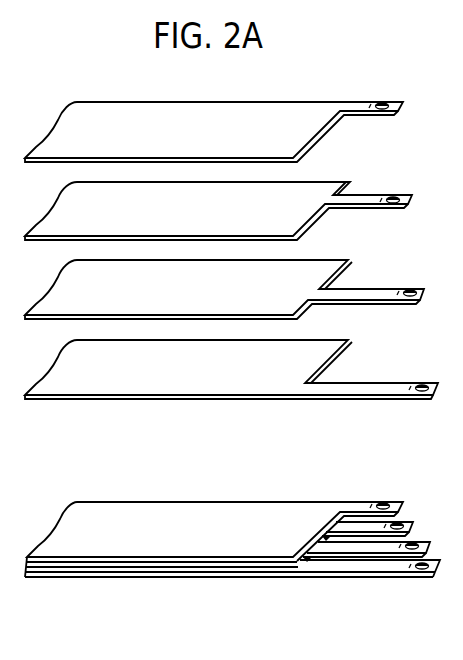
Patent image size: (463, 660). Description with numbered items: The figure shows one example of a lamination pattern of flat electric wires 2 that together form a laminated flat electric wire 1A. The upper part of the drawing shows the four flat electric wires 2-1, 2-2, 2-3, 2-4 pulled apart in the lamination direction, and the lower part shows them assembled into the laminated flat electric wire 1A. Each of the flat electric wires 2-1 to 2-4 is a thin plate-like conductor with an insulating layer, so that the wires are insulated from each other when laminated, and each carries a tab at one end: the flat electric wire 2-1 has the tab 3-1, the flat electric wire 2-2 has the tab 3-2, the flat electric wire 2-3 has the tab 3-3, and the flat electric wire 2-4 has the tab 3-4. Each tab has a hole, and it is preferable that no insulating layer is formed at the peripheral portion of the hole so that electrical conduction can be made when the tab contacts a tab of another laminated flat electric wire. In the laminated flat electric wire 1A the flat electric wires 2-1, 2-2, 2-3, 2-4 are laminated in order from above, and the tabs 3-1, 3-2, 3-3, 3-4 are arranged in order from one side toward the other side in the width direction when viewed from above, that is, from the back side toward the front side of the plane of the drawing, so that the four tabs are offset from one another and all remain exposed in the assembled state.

The flat electric wires 2 is at (135, 135).
The flat electric wire 2-1 is at (214, 140).
The flat electric wire 2-2 is at (218, 227).
The flat electric wire 2-3 is at (224, 313).
The flat electric wire 2-4 is at (231, 401).
The tab 3-1 is at (379, 111).
The tab 3-2 is at (386, 208).
The tab 3-3 is at (406, 304).
The tab 3-4 is at (417, 399).
The laminated flat electric wire 1A is at (187, 629).